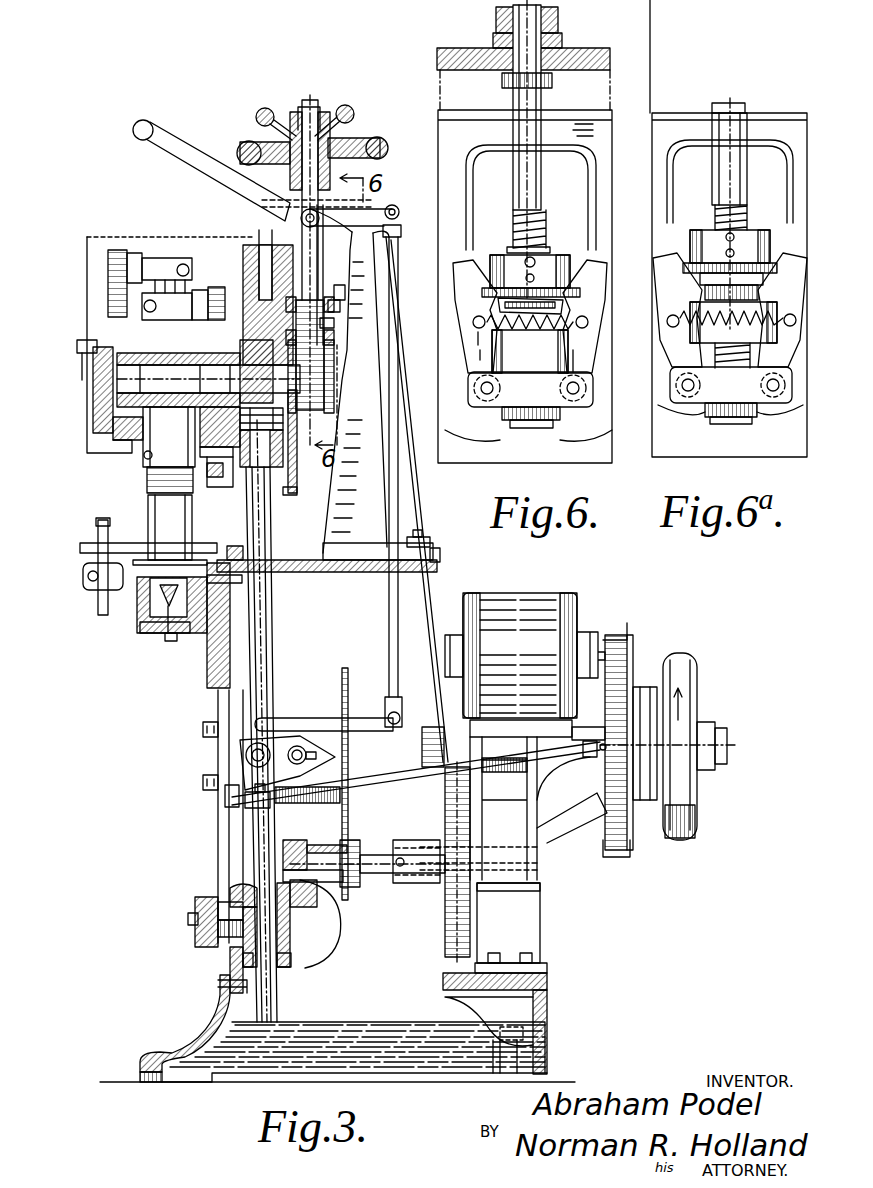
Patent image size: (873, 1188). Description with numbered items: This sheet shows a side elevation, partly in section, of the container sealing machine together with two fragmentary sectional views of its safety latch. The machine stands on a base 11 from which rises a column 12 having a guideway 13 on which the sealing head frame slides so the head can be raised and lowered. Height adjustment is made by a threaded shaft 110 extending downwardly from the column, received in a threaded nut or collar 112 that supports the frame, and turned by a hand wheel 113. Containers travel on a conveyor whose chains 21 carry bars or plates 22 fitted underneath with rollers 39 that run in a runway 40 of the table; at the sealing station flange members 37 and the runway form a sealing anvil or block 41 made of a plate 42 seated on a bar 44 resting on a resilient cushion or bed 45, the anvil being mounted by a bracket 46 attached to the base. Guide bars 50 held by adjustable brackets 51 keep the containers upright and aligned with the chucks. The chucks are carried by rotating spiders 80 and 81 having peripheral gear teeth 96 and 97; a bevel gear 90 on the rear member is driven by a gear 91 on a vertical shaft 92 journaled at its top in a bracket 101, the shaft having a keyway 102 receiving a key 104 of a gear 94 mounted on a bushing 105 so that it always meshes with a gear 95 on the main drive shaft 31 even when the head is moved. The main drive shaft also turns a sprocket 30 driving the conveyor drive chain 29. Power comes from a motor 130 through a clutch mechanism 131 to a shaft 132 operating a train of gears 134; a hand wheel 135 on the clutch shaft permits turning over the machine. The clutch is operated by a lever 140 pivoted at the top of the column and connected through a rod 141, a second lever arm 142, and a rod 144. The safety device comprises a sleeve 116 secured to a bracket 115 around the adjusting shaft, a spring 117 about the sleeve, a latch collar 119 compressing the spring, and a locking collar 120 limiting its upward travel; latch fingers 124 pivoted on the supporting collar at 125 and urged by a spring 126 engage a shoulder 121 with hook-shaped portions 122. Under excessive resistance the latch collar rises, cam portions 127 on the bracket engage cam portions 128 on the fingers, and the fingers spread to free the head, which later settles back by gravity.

In FIG. 3, the base 11 is at (242, 658).
In FIG. 3, the column 12 is at (365, 421).
In FIG. 6, the column 12 is at (525, 286).
In FIG. 6A, the column 12 is at (655, 430).
In FIG. 3, the guideway 13 is at (263, 248).
In FIG. 3, the chains 21 is at (200, 572).
In FIG. 3, the bars or plates 22 is at (190, 561).
In FIG. 3, the drive chain 29 is at (349, 753).
In FIG. 3, the sprocket 30 is at (348, 886).
In FIG. 3, the main drive shaft 31 is at (383, 874).
In FIG. 3, the flange members 37 is at (205, 600).
In FIG. 3, the rollers 39 is at (171, 568).
In FIG. 3, the runway 40 is at (160, 560).
In FIG. 3, the sealing anvil or block 41 is at (166, 640).
In FIG. 3, the plate 42 is at (150, 632).
In FIG. 3, the bar 44 is at (210, 586).
In FIG. 3, the cushion or bed 45 is at (160, 636).
In FIG. 3, the bracket 46 is at (207, 630).
In FIG. 3, the guide bars 50 is at (140, 542).
In FIG. 3, the brackets 51 is at (97, 585).
In FIG. 3, the rotating spider 80 is at (108, 310).
In FIG. 3, the rotating member 81 is at (193, 258).
In FIG. 3, the bevel gear 90 is at (224, 300).
In FIG. 3, the gear 91 is at (283, 457).
In FIG. 3, the vertical shaft 92 is at (280, 593).
In FIG. 3, the gear 94 is at (240, 893).
In FIG. 3, the gear 95 is at (307, 848).
In FIG. 3, the gear teeth 96 is at (115, 248).
In FIG. 3, the gear teeth 97 is at (210, 290).
In FIG. 3, the bracket 101 is at (286, 418).
In FIG. 3, the keyway 102 is at (262, 836).
In FIG. 3, the key 104 is at (232, 981).
In FIG. 3, the bushing 105 is at (296, 937).
In FIG. 3, the threaded shaft 110 is at (318, 400).
In FIG. 6, the threaded shaft 110 is at (513, 199).
In FIG. 6A, the threaded shaft 110 is at (742, 198).
In FIG. 3, the threaded nut or collar 112 is at (318, 408).
In FIG. 6, the threaded nut or collar 112 is at (530, 400).
In FIG. 6A, the threaded nut or collar 112 is at (731, 395).
In FIG. 3, the hand wheel 113 is at (381, 144).
In FIG. 3, the bracket 115 is at (335, 380).
In FIG. 6, the bracket 115 is at (573, 355).
In FIG. 6A, the bracket 115 is at (751, 355).
In FIG. 3, the sleeve 116 is at (292, 298).
In FIG. 6, the sleeve 116 is at (553, 243).
In FIG. 3, the spring 117 is at (327, 322).
In FIG. 6, the spring 117 is at (480, 302).
In FIG. 6A, the spring 117 is at (767, 287).
In FIG. 3, the latch collar 119 is at (333, 306).
In FIG. 6, the latch collar 119 is at (567, 276).
In FIG. 6A, the latch collar 119 is at (763, 233).
In FIG. 3, the locking collar 120 is at (334, 292).
In FIG. 6, the shoulder 121 is at (488, 265).
In FIG. 6, the hook-shaped portions 122 is at (500, 283).
In FIG. 6, the latch fingers 124 is at (665, 300).
In FIG. 6A, the latch fingers 124 is at (731, 319).
In FIG. 6, the pivot 125 is at (488, 396).
In FIG. 6A, the pivot 125 is at (690, 393).
In FIG. 6, the spring 126 is at (530, 351).
In FIG. 6A, the spring 126 is at (733, 322).
In FIG. 6, the cam portions 127 is at (493, 353).
In FIG. 6, the cam portions 128 is at (493, 328).
In FIG. 3, the motor 130 is at (526, 783).
In FIG. 3, the clutch mechanism 131 is at (634, 687).
In FIG. 3, the shaft 132 is at (728, 744).
In FIG. 3, the train of gears 134 is at (445, 932).
In FIG. 3, the hand wheel 135 is at (692, 664).
In FIG. 3, the lever 140 is at (171, 146).
In FIG. 3, the rod 141 is at (389, 610).
In FIG. 3, the second lever arm 142 is at (322, 716).
In FIG. 3, the rod 144 is at (417, 785).